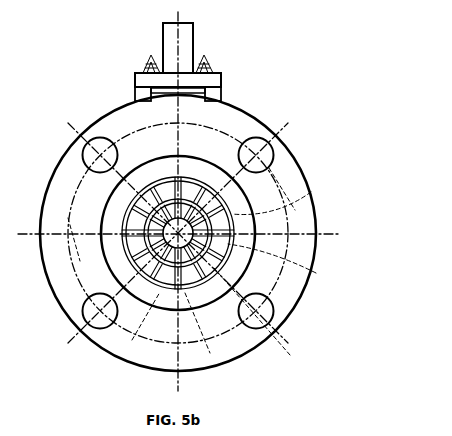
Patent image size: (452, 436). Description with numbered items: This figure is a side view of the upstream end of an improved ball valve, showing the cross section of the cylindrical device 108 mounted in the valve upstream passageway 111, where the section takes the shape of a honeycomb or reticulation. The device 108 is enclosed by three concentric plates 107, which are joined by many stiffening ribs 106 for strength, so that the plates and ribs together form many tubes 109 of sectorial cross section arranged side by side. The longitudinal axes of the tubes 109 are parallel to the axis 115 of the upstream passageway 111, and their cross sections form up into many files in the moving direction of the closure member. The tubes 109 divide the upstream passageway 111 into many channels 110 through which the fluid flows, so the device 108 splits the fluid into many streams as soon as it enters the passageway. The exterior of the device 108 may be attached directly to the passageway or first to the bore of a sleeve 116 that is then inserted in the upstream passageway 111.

The stiffening ribs 106 is at (84, 148).
The concentric plates 107 is at (311, 192).
The cylindrical device 108 is at (206, 176).
The tubes 109 is at (130, 244).
The channels 110 is at (124, 229).
The upstream passageway 111 is at (200, 287).
The axis 115 is at (127, 233).
The sleeve 116 is at (128, 148).